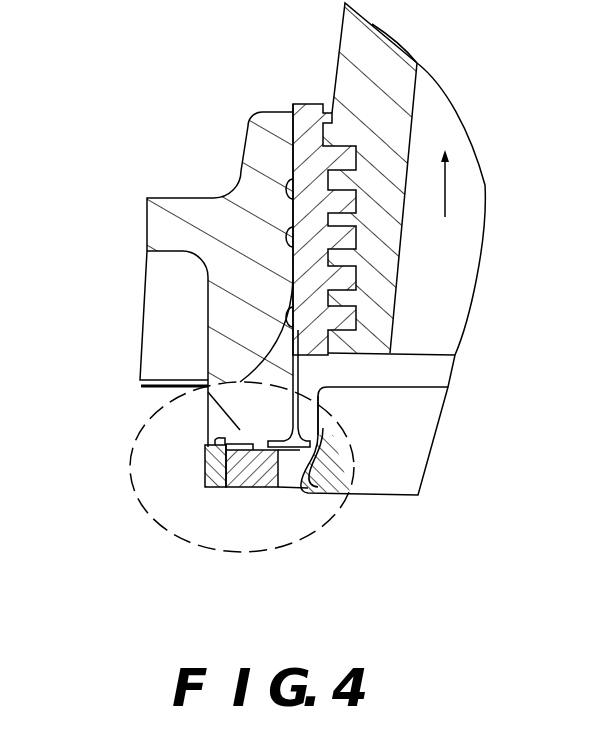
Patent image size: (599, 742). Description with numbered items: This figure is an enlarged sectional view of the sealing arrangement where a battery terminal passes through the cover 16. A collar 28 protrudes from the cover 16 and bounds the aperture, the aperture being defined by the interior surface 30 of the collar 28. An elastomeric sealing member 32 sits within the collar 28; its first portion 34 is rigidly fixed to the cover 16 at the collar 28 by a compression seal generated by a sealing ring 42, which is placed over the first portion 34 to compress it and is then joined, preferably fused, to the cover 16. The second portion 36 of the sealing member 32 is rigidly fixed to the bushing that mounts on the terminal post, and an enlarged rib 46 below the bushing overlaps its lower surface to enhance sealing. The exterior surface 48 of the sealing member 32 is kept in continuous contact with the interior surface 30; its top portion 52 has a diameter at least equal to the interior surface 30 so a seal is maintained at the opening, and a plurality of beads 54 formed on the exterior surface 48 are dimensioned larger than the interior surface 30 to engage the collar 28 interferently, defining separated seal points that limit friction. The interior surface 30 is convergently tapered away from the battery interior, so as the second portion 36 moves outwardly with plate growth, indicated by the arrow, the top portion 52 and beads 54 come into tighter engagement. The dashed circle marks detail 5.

The cover 16 is at (157, 254).
The collar 28 is at (262, 127).
The interior surface 30 is at (293, 188).
The sealing member 32 is at (306, 92).
The first portion 34 is at (292, 382).
The second portion 36 is at (352, 227).
The sealing ring 42 is at (232, 495).
The enlarged rib 46 is at (340, 387).
The exterior surface 48 is at (290, 237).
The top portion 52 is at (278, 132).
The beads 54 is at (281, 262).
The detail view circle FIG. 5 is at (318, 542).